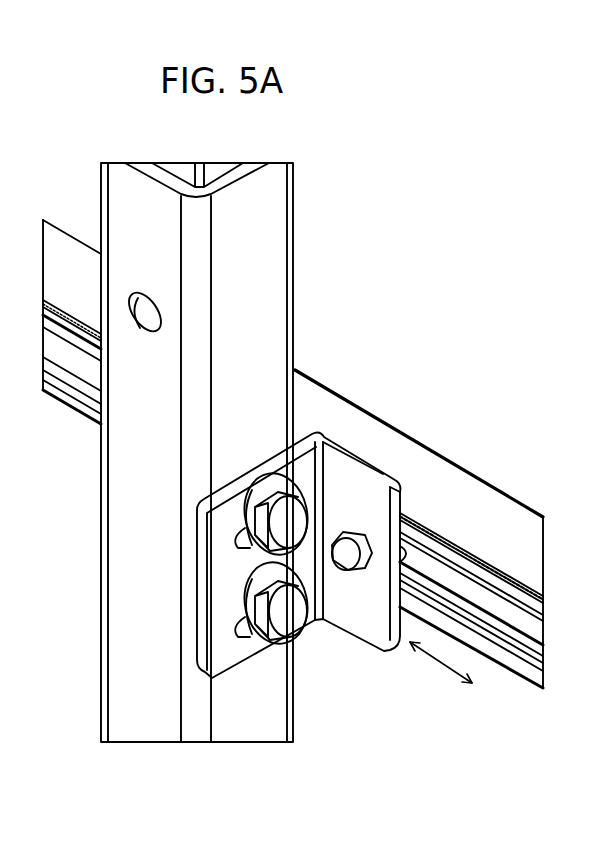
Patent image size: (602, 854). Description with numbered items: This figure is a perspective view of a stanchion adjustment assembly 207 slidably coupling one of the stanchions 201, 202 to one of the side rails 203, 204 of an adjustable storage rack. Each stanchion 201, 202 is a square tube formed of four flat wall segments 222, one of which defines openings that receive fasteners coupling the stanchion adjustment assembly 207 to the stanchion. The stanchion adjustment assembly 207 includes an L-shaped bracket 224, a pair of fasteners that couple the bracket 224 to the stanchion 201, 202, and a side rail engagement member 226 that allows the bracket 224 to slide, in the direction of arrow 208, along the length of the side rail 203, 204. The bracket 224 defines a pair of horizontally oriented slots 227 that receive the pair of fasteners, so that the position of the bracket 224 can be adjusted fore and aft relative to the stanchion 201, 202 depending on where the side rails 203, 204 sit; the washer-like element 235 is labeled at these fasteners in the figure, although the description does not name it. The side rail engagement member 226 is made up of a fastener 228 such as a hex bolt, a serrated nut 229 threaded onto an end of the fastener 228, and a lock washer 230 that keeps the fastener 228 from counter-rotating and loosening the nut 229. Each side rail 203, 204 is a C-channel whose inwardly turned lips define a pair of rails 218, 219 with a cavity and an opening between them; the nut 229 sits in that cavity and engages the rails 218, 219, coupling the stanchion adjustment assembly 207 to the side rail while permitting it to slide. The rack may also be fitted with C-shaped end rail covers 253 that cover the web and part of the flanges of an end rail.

The stanchion 201 is at (251, 452).
The stanchion 202 is at (268, 257).
The side rail 203 is at (435, 534).
The side rail 204 is at (72, 322).
The stanchion adjustment assembly 207 is at (210, 620).
The arrow 208 is at (435, 661).
The rail 218 is at (505, 600).
The rail 219 is at (512, 640).
The flat wall segment 222 is at (272, 320).
The bracket 224 is at (213, 637).
The side rail engagement member 226 is at (379, 544).
The opening 227 is at (230, 527).
The fastener 228 is at (344, 563).
The nut 229 is at (420, 532).
The lock washer 230 is at (407, 553).
The washers 235 is at (280, 530).
The end rail cover 253 is at (422, 473).